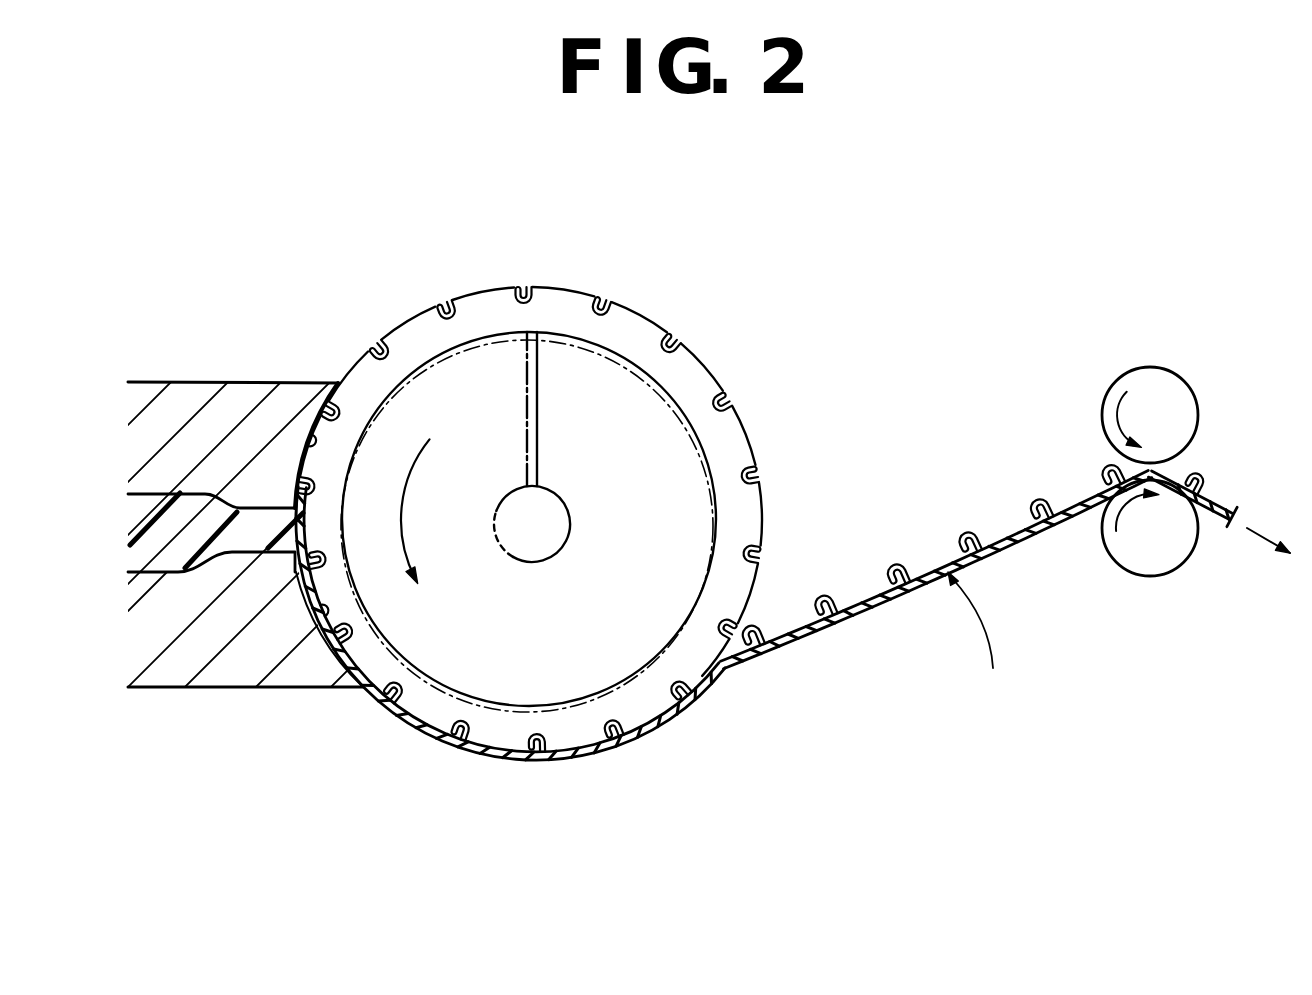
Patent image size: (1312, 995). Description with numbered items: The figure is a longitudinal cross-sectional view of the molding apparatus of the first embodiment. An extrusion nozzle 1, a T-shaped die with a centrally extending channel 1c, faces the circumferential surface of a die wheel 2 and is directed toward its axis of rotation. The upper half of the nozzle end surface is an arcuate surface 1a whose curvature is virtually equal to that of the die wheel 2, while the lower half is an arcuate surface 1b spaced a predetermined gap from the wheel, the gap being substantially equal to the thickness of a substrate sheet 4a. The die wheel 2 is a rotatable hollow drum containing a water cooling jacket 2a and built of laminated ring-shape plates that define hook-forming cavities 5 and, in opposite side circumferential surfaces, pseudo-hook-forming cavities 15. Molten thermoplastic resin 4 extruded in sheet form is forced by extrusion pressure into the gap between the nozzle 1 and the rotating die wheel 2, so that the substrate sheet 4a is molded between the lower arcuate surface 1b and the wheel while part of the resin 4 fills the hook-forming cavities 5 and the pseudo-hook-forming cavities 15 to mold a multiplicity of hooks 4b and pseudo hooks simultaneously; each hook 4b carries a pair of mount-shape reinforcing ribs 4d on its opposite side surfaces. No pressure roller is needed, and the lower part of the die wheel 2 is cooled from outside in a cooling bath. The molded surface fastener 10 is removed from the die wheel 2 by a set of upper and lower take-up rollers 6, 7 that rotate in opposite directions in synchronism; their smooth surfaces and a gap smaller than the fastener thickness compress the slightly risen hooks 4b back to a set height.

The extrusion nozzle 1 is at (197, 412).
The arcuate surface 1a is at (300, 452).
The arcuate surface 1b is at (310, 575).
The channel 1c is at (262, 549).
The die wheel 2 is at (581, 497).
The water cooling jacket 2a is at (568, 336).
The molten resin 4 is at (670, 655).
The substrate sheet 4a is at (565, 765).
The hooks 4b is at (756, 655).
The reinforcing ribs 4d is at (968, 533).
The hook-forming cavities 5 is at (582, 447).
The pseudo-hook-forming cavities 15 is at (726, 412).
The upper take-up roller 6 is at (1158, 393).
The lower take-up roller 7 is at (1143, 560).
The surface fastener 10 is at (983, 640).